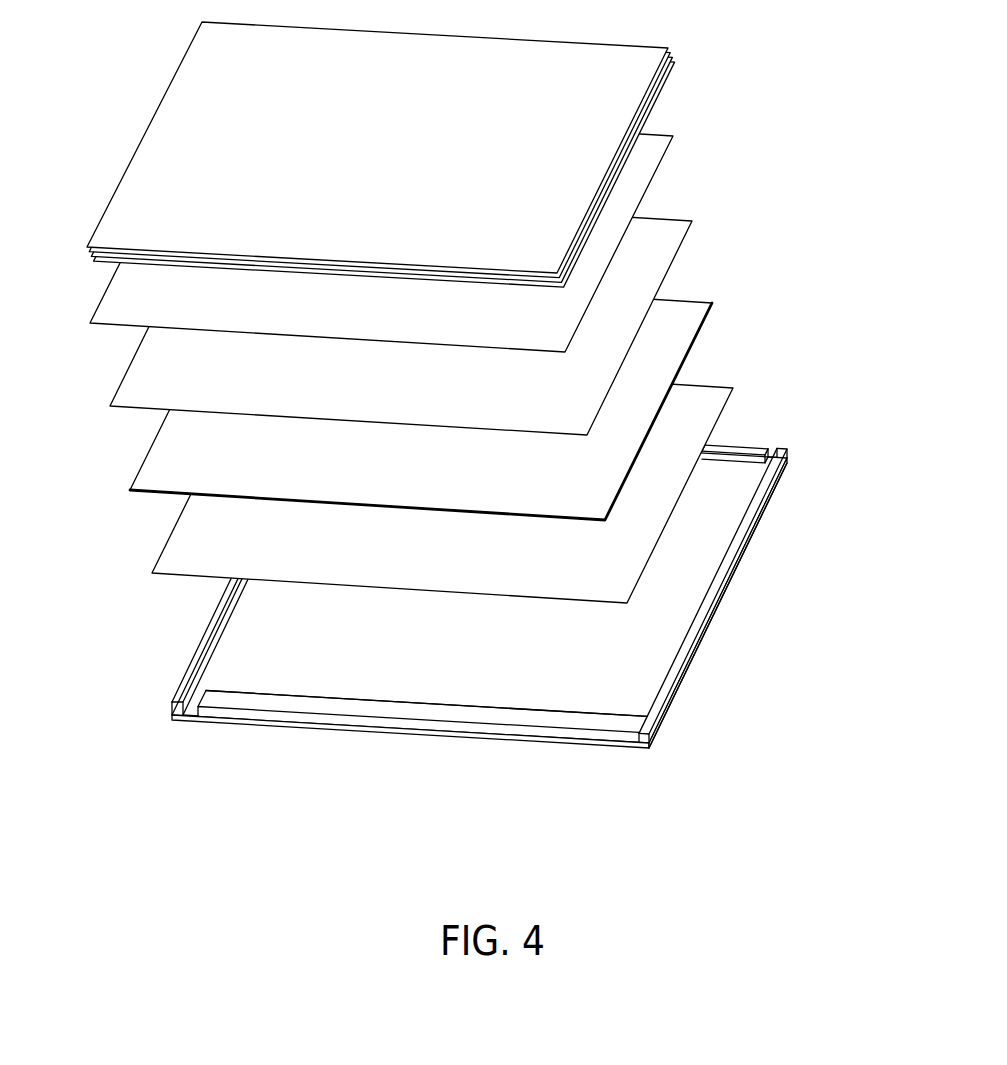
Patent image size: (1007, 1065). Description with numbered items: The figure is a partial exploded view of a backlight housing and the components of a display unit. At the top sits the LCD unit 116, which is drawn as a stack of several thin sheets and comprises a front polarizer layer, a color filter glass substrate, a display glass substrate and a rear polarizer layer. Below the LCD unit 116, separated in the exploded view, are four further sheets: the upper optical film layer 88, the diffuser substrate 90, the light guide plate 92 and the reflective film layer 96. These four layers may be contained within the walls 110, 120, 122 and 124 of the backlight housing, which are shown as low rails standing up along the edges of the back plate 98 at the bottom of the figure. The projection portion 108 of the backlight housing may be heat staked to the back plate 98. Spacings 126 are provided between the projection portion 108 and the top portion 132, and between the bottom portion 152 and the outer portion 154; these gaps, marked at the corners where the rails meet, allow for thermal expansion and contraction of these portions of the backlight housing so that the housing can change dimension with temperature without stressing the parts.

The upper optical film layer 88 is at (656, 173).
The diffuser substrate 90 is at (677, 254).
The light guide plate 92 is at (707, 330).
The reflective film layer 96 is at (732, 402).
The back plate 98 is at (189, 719).
The projection portion 108 is at (487, 712).
The wall 110 is at (337, 694).
The LCD unit 116 is at (82, 222).
The wall 120 is at (216, 645).
The wall 122 is at (705, 620).
The wall 124 is at (740, 455).
The spacings 126 is at (780, 441).
The top portion 132 is at (195, 658).
The bottom portion 152 is at (682, 664).
The outer portion 154 is at (760, 442).